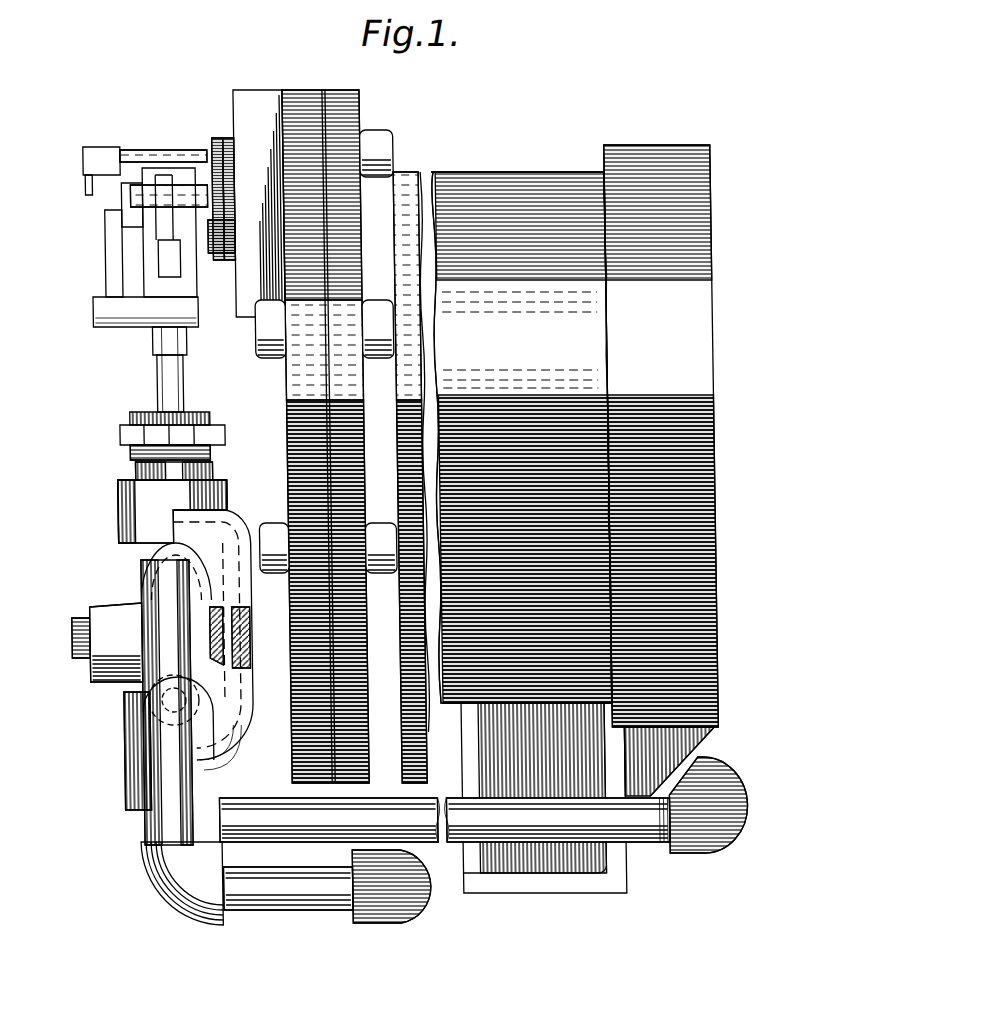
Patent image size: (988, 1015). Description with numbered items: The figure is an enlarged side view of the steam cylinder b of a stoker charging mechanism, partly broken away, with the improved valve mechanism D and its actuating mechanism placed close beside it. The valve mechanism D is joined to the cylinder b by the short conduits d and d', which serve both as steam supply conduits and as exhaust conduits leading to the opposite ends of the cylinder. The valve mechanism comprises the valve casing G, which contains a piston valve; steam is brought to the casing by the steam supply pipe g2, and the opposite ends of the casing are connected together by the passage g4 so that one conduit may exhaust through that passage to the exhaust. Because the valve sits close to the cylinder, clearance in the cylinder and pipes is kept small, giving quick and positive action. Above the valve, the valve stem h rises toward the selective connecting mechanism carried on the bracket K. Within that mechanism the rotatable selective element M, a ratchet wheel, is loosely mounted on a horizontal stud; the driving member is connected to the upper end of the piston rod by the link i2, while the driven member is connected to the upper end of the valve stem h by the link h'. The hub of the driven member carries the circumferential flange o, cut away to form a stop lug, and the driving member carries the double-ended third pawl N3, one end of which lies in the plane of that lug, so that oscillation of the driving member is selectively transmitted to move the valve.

The bracket K is at (261, 92).
The gear R is at (232, 138).
The rotatable selective element M is at (220, 143).
The third pawl N3 is at (173, 180).
The flange o is at (145, 182).
The link h' is at (127, 268).
The link i2 is at (156, 265).
The valve stem h is at (188, 369).
The valve mechanism D is at (230, 500).
The valve casing G is at (135, 505).
The passage g4 is at (228, 630).
The steam supply pipe g2 is at (68, 638).
The conduit d' is at (100, 664).
The conduit d is at (444, 841).
The steam cylinder b is at (576, 519).